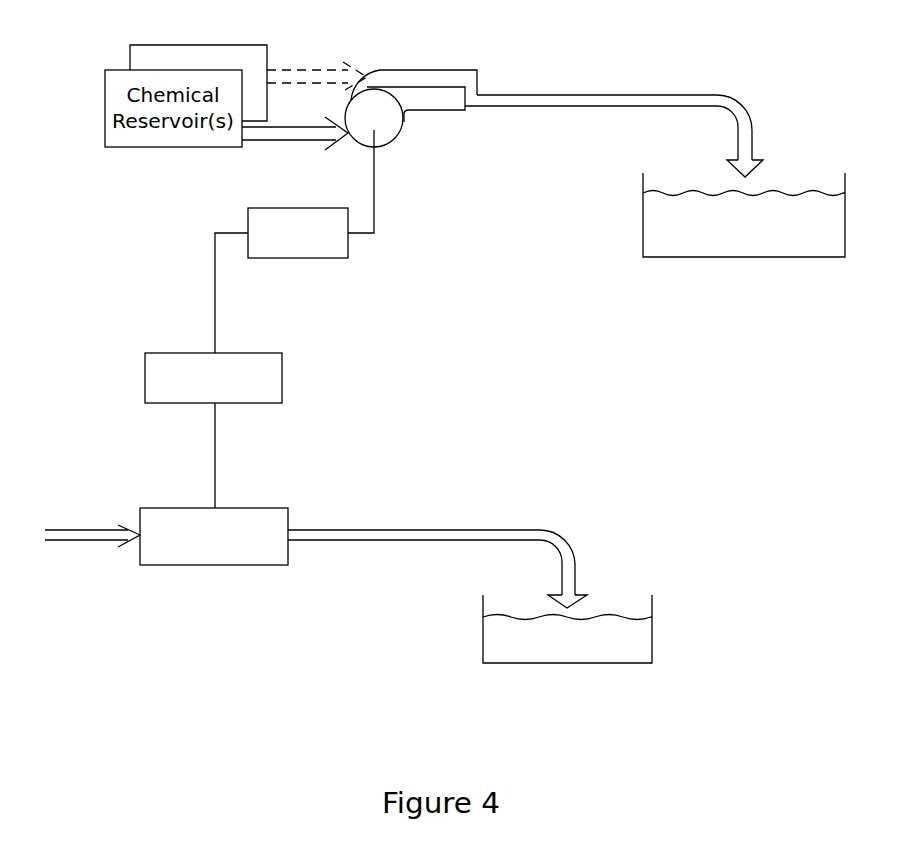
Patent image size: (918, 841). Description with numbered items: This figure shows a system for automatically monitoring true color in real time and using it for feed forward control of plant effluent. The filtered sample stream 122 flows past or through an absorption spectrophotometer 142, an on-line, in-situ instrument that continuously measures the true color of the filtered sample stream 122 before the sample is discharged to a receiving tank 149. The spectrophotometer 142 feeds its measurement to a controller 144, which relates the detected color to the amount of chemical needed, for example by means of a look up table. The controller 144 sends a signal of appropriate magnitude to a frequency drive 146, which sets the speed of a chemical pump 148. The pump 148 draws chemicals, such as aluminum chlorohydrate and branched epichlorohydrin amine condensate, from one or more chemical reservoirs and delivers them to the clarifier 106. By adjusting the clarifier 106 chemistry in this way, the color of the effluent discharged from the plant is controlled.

The clarifier 106 is at (727, 250).
The filtered sample stream 122 is at (80, 530).
The absorption spectrophotometer 142 is at (282, 550).
The controller 144 is at (273, 388).
The frequency drive 146 is at (348, 245).
The chemical pump 148 is at (427, 107).
The waste tank 149 is at (643, 645).